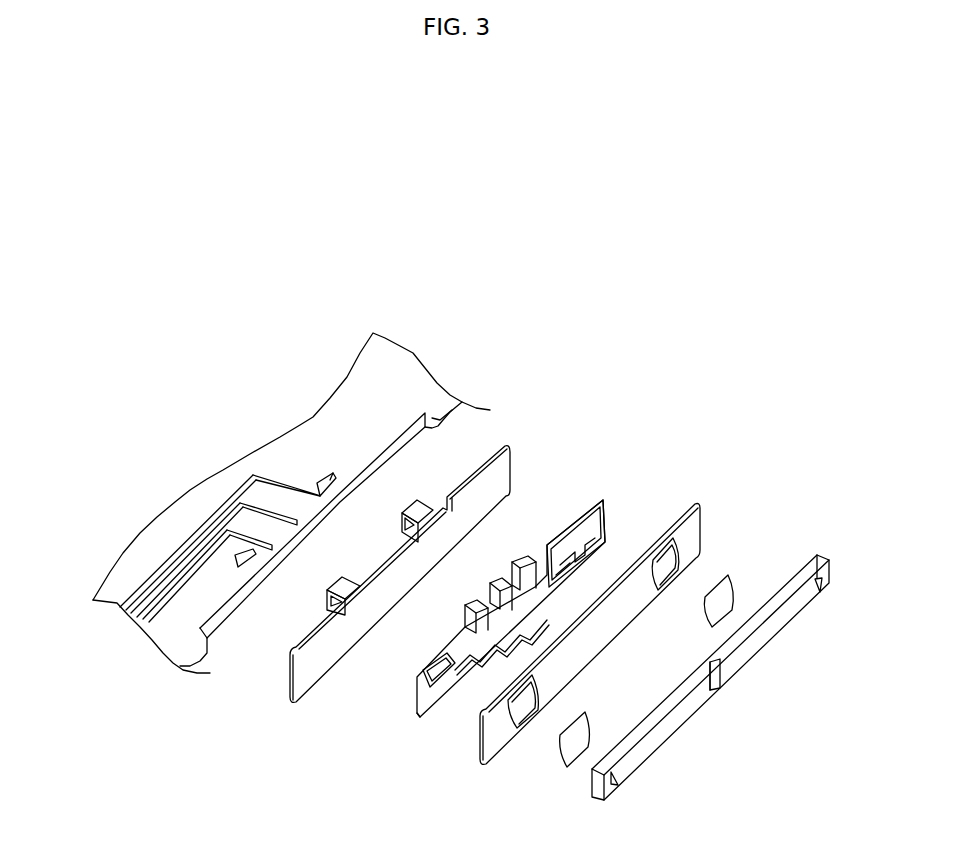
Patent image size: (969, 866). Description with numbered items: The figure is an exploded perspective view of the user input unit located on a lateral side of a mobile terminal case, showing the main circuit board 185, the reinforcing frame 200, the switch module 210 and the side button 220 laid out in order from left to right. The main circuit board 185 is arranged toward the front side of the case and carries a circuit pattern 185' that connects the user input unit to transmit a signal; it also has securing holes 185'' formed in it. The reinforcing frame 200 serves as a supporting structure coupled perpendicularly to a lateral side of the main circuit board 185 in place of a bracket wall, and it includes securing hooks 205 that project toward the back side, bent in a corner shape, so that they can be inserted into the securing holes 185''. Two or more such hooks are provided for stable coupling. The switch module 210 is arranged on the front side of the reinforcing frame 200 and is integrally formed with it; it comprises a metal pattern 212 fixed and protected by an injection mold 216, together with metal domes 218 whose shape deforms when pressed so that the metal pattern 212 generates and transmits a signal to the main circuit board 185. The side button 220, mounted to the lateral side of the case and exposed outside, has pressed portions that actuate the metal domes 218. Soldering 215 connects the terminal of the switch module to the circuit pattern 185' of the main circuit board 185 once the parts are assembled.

The main circuit board 185 is at (291, 503).
The circuit pattern 185' is at (266, 452).
The securing hole 185'' is at (307, 431).
The reinforcing frame 200 is at (508, 468).
The securing hook 205 is at (419, 503).
The switch module 210 is at (614, 491).
The metal pattern 212 is at (577, 530).
The soldering 215 is at (520, 557).
The injection mold 216 is at (700, 522).
The metal dome 218 is at (722, 588).
The side button 220 is at (795, 582).